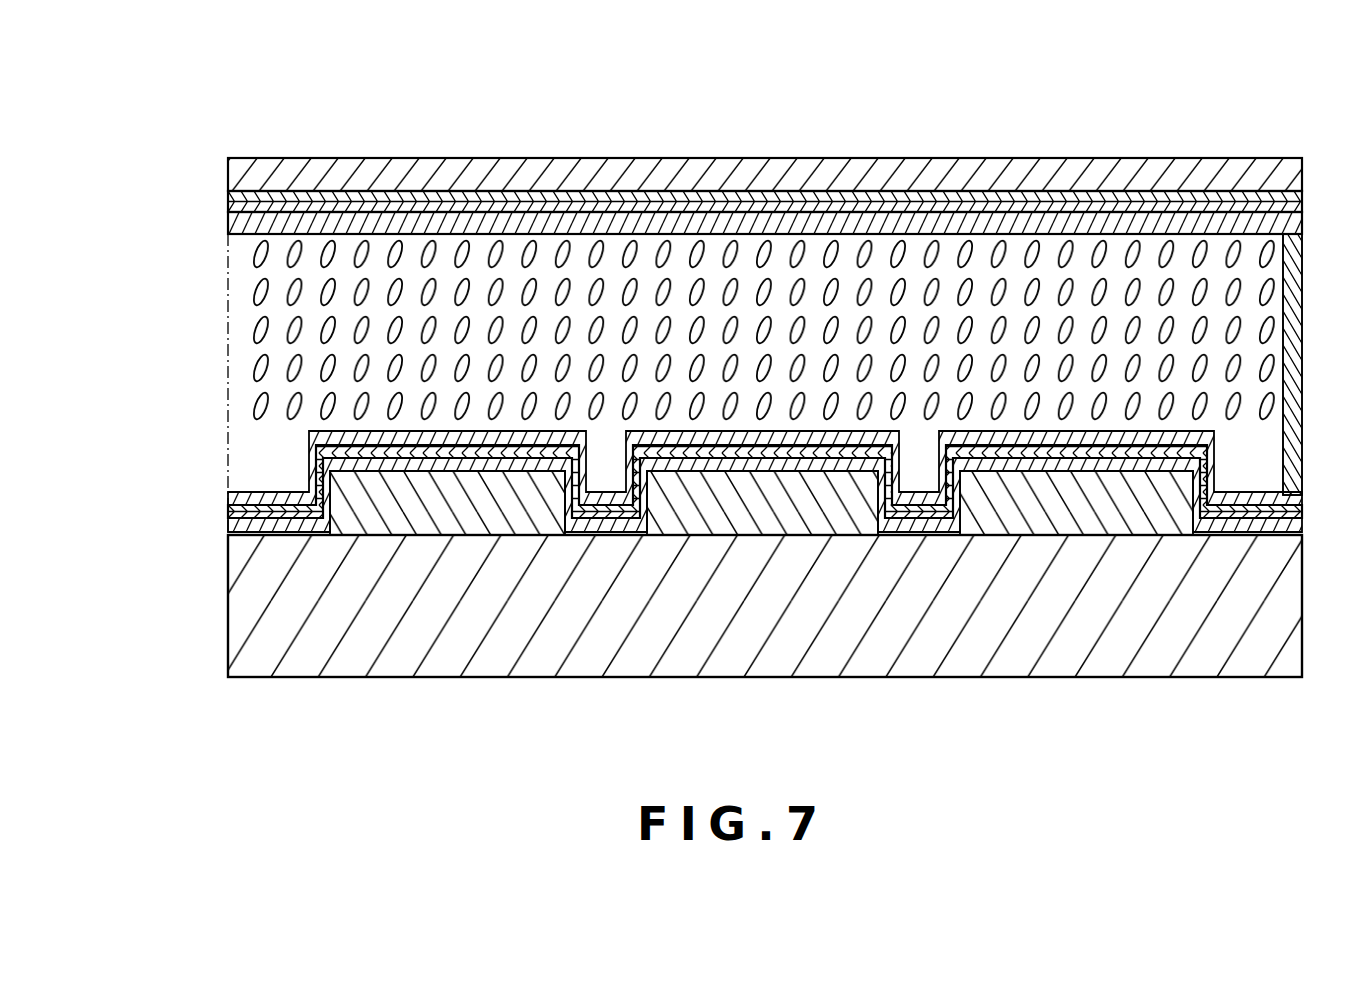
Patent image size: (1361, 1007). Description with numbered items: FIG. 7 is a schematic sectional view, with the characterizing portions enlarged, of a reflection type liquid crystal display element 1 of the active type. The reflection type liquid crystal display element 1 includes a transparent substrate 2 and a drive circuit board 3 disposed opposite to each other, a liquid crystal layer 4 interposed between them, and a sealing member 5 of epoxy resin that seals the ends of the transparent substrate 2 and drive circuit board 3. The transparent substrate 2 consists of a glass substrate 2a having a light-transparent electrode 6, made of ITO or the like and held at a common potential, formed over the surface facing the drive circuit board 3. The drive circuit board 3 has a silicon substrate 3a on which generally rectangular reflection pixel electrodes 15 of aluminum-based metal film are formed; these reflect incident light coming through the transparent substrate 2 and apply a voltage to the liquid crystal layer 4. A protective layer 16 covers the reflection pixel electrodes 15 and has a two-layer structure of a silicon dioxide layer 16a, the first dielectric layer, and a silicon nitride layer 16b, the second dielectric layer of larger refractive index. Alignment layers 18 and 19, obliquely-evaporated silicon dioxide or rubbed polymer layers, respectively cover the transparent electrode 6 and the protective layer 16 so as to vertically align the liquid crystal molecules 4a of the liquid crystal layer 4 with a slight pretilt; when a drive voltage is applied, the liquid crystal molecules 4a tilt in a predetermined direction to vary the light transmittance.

The reflection type liquid crystal display element 1 is at (741, 110).
The transparent substrate 2 is at (1310, 160).
The glass substrate 2a is at (229, 168).
The transparent electrode 6 is at (229, 200).
The alignment layer 19 is at (229, 224).
The liquid crystal layer 4 is at (1262, 322).
The liquid crystal molecules 4a is at (258, 363).
The sealing member 5 is at (1292, 385).
The alignment layer 18 is at (240, 488).
The protective layer 16 is at (120, 487).
The silicon dioxide layer 16a is at (240, 522).
The silicon nitride layer 16b is at (240, 508).
The reflection pixel electrode 15 is at (757, 510).
The drive circuit board 3 is at (1310, 497).
The silicon substrate 3a is at (262, 596).